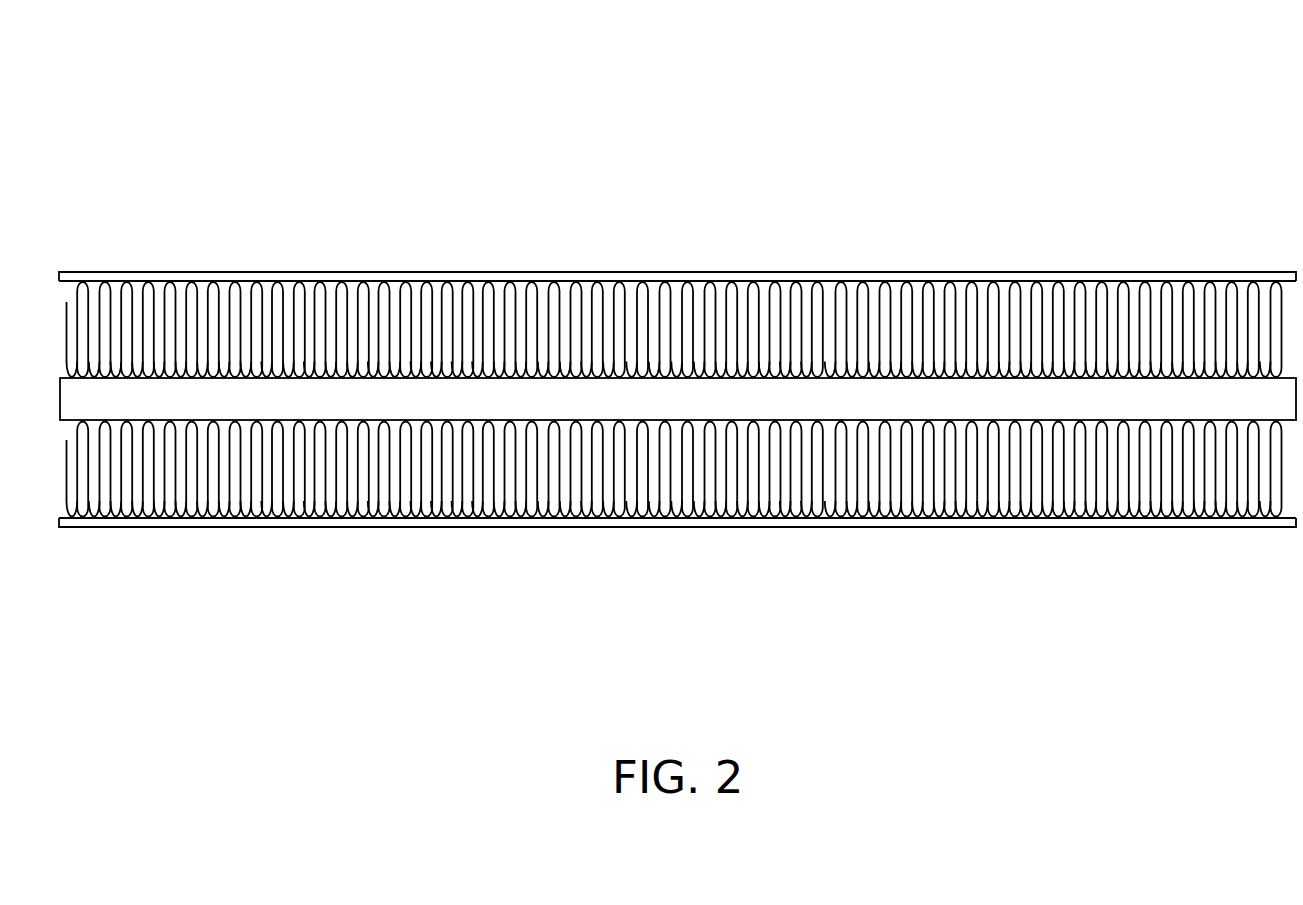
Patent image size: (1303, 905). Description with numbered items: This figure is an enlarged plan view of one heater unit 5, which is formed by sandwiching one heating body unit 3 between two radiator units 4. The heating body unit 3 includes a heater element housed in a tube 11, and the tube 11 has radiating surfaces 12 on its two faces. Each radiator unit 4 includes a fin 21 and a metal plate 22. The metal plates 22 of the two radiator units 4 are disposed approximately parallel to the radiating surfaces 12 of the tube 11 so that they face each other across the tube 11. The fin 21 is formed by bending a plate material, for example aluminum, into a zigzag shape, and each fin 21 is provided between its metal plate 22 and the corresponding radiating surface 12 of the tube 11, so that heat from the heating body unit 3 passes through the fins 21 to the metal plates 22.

The heater unit 5 is at (795, 118).
The heating body unit 3 is at (977, 403).
The radiator unit 4 is at (392, 273).
The tube 11 is at (842, 403).
The radiating surface 12 is at (730, 370).
The fin 21 is at (669, 333).
The metal plate 22 is at (537, 277).